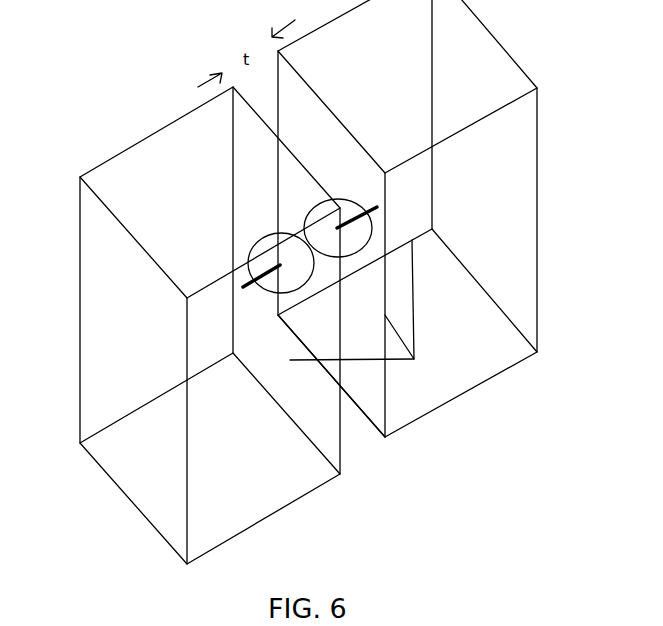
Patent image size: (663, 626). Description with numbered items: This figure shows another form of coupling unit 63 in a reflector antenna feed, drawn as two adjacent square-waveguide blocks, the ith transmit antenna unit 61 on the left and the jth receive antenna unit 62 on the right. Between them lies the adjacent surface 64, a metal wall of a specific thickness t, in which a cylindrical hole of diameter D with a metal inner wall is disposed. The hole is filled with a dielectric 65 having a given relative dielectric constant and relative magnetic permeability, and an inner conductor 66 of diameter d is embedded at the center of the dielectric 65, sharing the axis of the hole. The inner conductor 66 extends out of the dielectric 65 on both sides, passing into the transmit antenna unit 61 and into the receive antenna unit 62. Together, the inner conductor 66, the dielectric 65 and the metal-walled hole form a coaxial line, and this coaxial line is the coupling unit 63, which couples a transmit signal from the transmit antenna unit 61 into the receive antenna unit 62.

The ith transmit antenna unit 61 is at (80, 217).
The jth receive antenna unit 62 is at (537, 148).
The coupling unit 63 is at (363, 318).
The adjacent surface 64 is at (348, 423).
The dielectric 65 is at (320, 262).
The inner conductor 66 is at (408, 197).